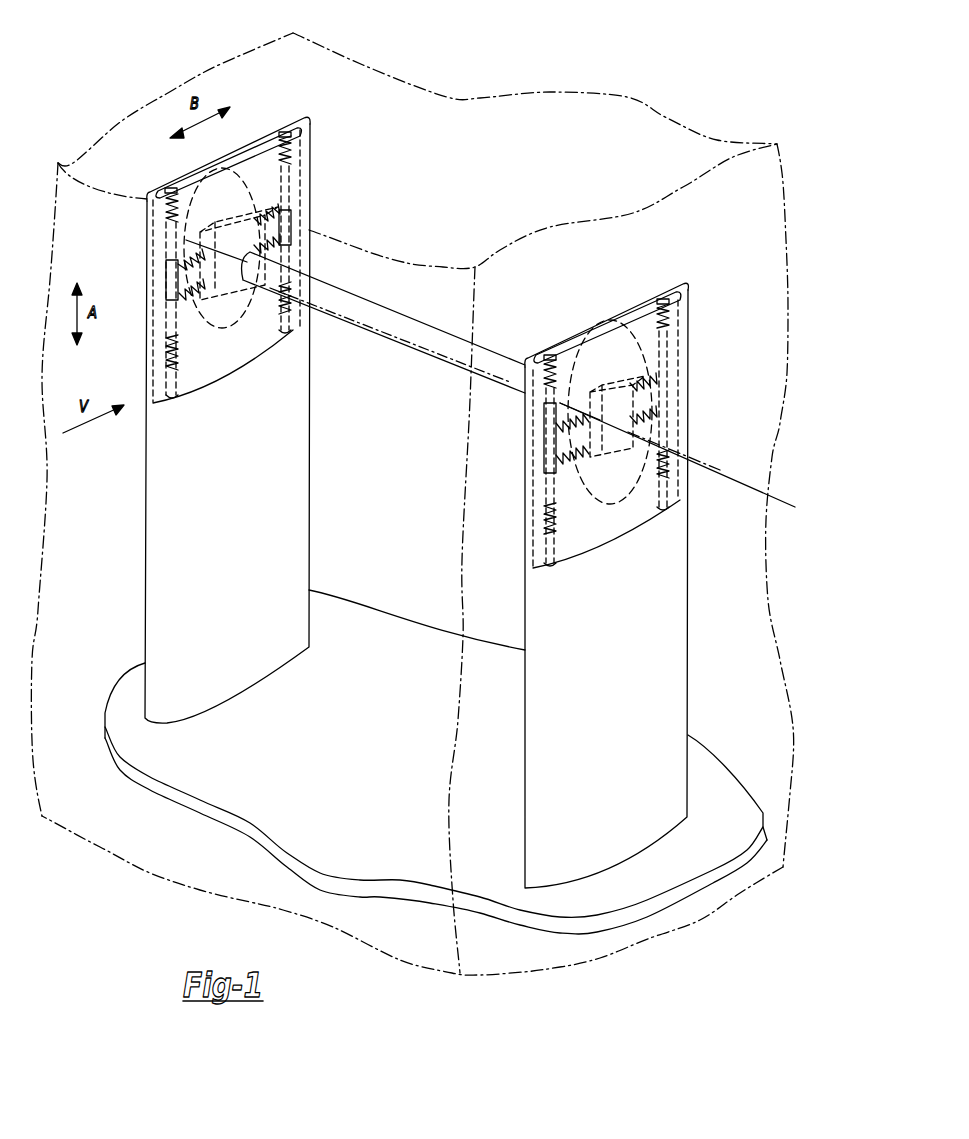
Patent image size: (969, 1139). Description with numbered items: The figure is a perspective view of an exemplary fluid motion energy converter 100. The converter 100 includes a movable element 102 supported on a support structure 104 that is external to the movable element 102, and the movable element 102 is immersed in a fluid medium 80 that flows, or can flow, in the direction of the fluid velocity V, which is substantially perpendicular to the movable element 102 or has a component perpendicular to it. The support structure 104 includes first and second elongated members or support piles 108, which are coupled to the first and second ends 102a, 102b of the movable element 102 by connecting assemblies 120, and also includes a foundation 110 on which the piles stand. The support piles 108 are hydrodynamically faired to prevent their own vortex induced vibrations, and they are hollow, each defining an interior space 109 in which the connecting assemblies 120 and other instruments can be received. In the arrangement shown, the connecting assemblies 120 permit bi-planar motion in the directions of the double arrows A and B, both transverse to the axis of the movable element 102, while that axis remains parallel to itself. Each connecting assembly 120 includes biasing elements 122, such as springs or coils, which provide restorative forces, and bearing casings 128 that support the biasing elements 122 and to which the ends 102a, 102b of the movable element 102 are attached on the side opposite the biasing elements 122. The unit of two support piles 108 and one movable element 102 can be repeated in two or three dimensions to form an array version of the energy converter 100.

The energy converter 100 is at (470, 85).
The fluid medium 80 is at (630, 132).
The connecting assemblies 120 is at (131, 268).
The support piles 108 is at (206, 530).
The foundation 110 is at (383, 665).
The movable element 102 is at (403, 342).
The first end 102a is at (253, 257).
The second end 102b is at (597, 387).
The support structure 104 is at (715, 472).
The interior space 109 is at (210, 385).
The biasing elements 122 is at (283, 135).
The bearing casings 128 is at (220, 326).